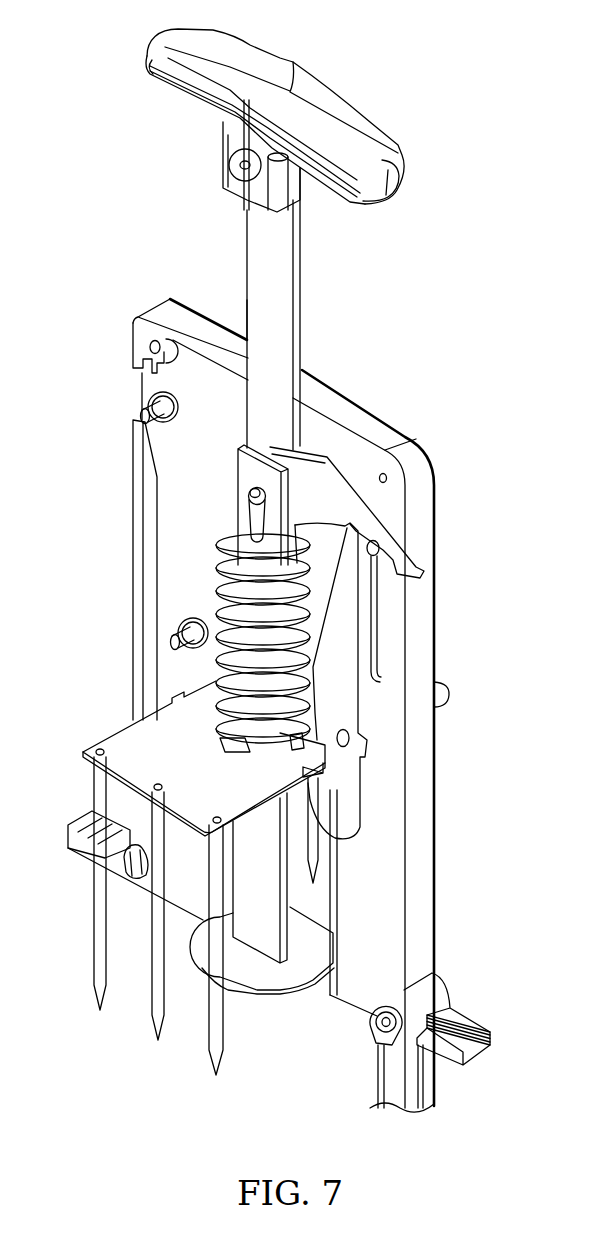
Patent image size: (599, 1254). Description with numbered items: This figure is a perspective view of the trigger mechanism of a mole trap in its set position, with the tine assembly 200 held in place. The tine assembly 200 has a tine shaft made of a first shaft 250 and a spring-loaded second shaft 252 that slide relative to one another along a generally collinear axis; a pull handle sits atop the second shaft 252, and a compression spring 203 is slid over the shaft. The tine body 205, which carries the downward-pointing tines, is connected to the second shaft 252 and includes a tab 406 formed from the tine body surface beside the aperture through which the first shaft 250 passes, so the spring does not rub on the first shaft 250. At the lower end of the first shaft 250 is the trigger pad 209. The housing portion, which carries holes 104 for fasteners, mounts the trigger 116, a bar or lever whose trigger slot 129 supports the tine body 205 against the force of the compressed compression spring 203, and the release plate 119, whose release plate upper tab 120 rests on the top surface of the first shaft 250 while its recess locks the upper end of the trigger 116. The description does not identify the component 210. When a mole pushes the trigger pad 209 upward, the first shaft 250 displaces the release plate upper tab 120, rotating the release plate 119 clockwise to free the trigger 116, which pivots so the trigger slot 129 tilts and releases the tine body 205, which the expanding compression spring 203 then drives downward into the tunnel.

The tine assembly 200 is at (312, 323).
The second shaft 252 is at (283, 266).
The holes 104 is at (153, 341).
The release plate upper tab 120 is at (278, 452).
The slide block 210 is at (245, 468).
The release plate 119 is at (338, 511).
The compression spring 203 is at (220, 615).
The trigger 116 is at (343, 695).
The tine body 205 is at (148, 738).
The tab 406 is at (228, 727).
The trigger slot 129 is at (323, 761).
The first shaft 250 is at (263, 893).
The trigger pad 209 is at (297, 973).